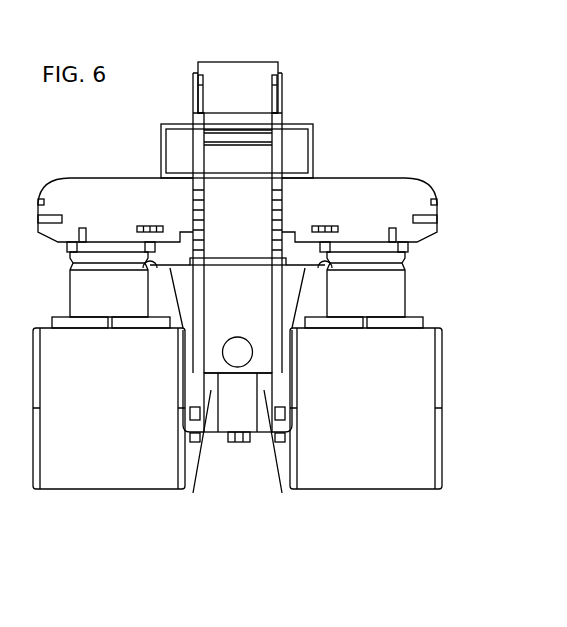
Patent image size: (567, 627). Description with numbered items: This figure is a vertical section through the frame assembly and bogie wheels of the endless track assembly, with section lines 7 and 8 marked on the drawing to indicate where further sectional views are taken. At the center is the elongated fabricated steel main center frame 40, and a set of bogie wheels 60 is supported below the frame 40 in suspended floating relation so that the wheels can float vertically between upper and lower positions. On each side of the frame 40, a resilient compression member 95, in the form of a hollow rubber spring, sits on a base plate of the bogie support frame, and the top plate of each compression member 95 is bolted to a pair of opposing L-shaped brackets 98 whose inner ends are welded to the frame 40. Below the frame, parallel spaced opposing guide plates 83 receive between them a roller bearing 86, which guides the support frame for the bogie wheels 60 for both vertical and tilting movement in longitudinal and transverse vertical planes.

The section line 7- 7 is at (195, 575).
The section line 8- 8 is at (500, 505).
The frame 40 is at (320, 136).
The L-shaped bracket 98 is at (345, 208).
The resilient compression member 95 is at (427, 278).
The bogie wheel 60 is at (430, 500).
The roller bearing 86 is at (235, 352).
The guide plate 83 is at (236, 430).